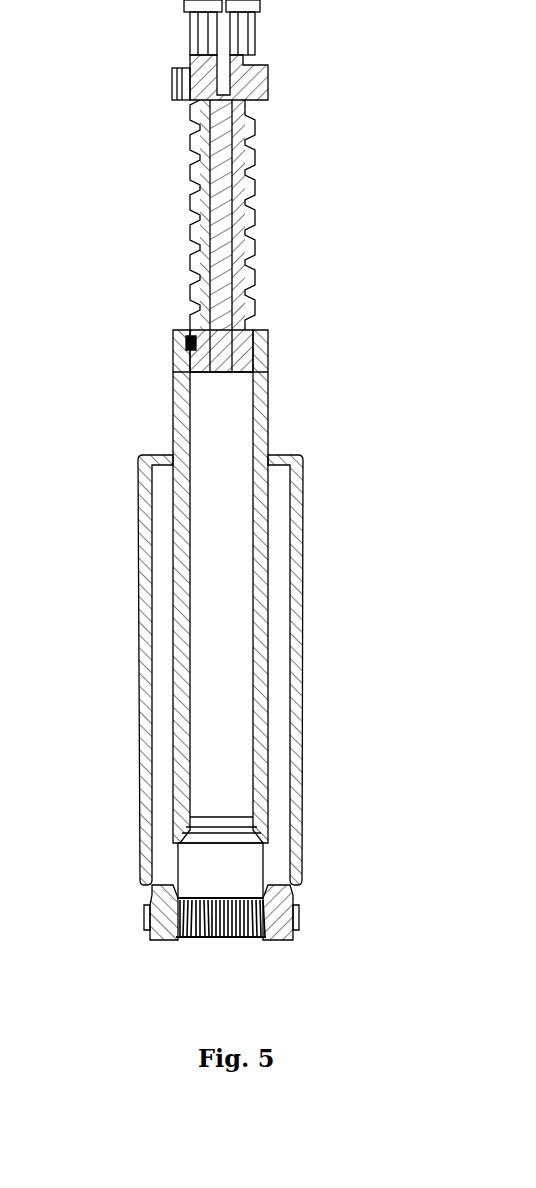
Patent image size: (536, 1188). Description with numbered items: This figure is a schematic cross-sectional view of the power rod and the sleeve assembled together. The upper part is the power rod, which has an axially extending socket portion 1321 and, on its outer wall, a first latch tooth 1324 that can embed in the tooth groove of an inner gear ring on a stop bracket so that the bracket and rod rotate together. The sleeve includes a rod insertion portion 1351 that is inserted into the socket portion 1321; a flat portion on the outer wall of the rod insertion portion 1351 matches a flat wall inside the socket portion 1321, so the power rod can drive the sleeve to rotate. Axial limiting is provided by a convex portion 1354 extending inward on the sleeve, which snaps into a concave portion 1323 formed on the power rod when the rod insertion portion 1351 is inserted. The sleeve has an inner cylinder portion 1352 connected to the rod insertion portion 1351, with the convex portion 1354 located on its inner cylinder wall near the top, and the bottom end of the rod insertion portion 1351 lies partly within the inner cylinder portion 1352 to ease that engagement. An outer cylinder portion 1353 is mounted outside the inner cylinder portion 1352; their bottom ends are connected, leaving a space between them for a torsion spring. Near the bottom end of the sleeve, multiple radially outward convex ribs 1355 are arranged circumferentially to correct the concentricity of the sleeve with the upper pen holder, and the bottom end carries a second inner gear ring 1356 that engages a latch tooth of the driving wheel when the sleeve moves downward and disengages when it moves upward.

The socket portion 1321 is at (262, 80).
The first latch tooth 1324 is at (172, 82).
The rod insertion portion 1351 is at (240, 248).
The concave portion 1323 is at (190, 325).
The convex portion 1354 is at (186, 350).
The inner cylinder portion 1352 is at (255, 537).
The outer cylinder portion 1353 is at (303, 657).
The convex ribs 1355 is at (299, 920).
The second inner gear ring 1356 is at (215, 940).